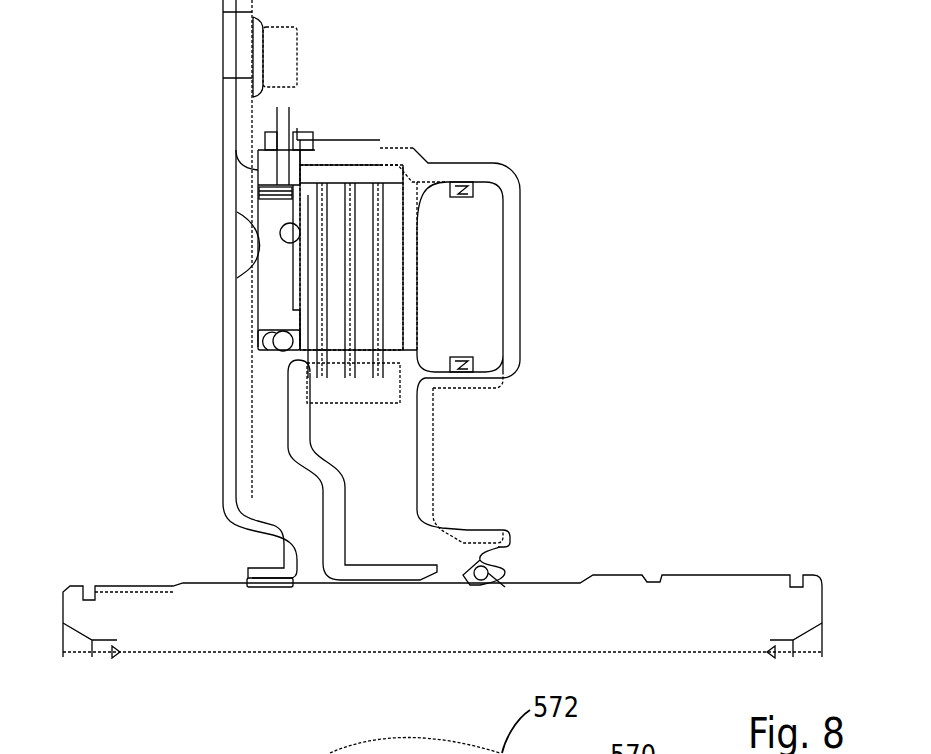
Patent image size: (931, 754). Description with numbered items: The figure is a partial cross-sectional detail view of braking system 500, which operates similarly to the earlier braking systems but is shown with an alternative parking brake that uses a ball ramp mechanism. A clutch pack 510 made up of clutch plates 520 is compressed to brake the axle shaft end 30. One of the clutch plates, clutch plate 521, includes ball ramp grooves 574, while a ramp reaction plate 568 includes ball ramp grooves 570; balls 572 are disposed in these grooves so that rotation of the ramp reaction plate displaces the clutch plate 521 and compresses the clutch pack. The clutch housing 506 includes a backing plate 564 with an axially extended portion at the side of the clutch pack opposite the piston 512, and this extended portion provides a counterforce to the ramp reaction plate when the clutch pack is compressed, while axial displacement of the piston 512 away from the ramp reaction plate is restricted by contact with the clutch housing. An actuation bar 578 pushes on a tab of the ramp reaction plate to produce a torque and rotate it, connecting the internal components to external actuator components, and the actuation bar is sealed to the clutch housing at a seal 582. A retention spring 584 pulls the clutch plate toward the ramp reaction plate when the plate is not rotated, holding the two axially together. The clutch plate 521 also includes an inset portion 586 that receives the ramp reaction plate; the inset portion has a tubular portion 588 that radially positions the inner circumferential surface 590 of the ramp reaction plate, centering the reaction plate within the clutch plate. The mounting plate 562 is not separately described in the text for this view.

The axle shaft end 30 is at (207, 634).
The braking system 500 is at (536, 146).
The clutch housing 506 is at (510, 353).
The clutch pack 510 is at (390, 135).
The piston 512 is at (420, 203).
The clutch plates 520 is at (338, 193).
The clutch plate 521 is at (310, 193).
The mounting plate 562 is at (228, 467).
The backing plate 564 is at (253, 260).
The ramp reaction plate 568 is at (270, 303).
The ball ramp grooves 570 is at (262, 250).
The balls 572 is at (281, 229).
The ball ramp grooves 574 is at (300, 235).
The actuation bar 578 is at (283, 120).
The seal 582 is at (297, 128).
The retention spring 584 is at (267, 353).
The inset portion 586 is at (319, 317).
The tubular portion 588 is at (297, 355).
The inner circumferential surface 590 is at (265, 343).